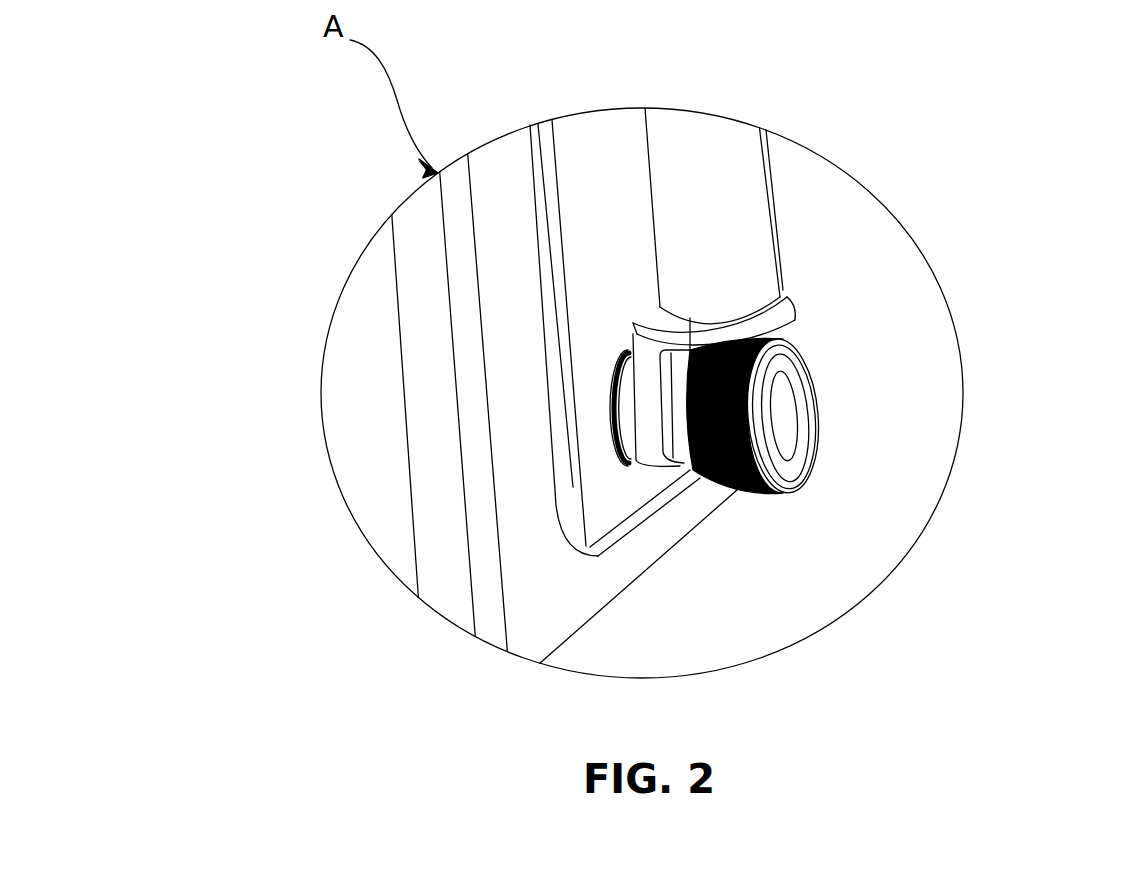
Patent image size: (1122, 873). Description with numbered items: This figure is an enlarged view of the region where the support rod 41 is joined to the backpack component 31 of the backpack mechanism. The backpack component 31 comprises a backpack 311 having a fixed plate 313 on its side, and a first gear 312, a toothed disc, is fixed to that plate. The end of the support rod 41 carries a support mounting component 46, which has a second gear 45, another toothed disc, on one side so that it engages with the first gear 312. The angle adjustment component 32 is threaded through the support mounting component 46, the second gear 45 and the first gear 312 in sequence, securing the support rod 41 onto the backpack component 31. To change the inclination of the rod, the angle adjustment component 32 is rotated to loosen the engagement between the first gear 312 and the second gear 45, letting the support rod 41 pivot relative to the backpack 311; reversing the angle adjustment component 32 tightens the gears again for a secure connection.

The backpack component 31 is at (393, 391).
The backpack 311 is at (488, 345).
The first gear 312 is at (620, 403).
The fixed plate 313 is at (610, 217).
The support rod 41 is at (693, 173).
The second gear 45 is at (668, 428).
The support mounting component 46 is at (782, 320).
The angle adjustment component 32 is at (760, 455).